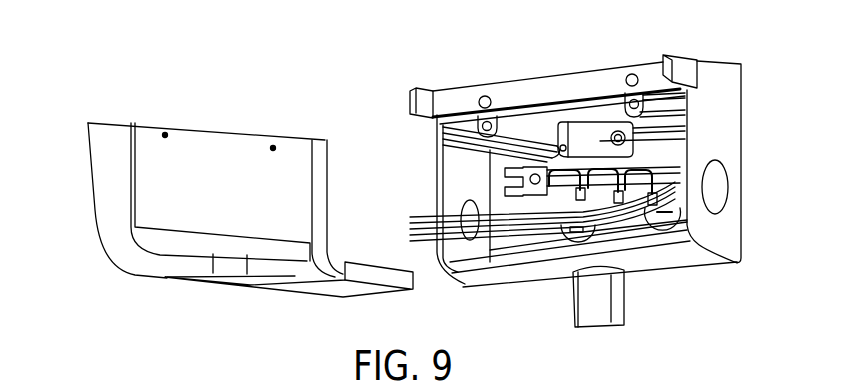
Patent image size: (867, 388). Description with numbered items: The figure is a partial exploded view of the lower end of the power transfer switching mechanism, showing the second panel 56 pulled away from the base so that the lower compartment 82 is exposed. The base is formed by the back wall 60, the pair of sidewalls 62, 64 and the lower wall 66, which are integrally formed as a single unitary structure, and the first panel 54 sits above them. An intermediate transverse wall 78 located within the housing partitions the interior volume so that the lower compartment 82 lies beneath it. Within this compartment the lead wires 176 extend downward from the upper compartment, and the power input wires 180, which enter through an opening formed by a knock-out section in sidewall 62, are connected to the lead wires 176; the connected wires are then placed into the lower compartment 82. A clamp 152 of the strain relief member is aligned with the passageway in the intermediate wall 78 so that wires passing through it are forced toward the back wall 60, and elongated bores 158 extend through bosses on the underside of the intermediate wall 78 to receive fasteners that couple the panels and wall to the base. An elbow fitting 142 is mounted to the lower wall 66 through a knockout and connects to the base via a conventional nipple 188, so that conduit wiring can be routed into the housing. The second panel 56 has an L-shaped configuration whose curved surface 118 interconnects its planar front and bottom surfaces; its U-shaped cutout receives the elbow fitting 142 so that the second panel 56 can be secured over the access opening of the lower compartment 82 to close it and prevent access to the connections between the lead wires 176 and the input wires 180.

The first panel 54 is at (286, 117).
The second panel 56 is at (104, 178).
The back wall 60 is at (628, 235).
The sidewall 62 is at (450, 173).
The sidewall 64 is at (727, 143).
The lower wall 66 is at (703, 268).
The intermediate transverse wall 78 is at (556, 99).
The lower compartment 82 is at (543, 240).
The curved surface 118 is at (657, 191).
The elbow fitting 142 is at (595, 323).
The clamp 152 is at (598, 130).
The elongated bores 158 is at (636, 100).
The lead wires 176 is at (652, 168).
The power input wires 180 is at (507, 222).
The nipple 188 is at (498, 116).